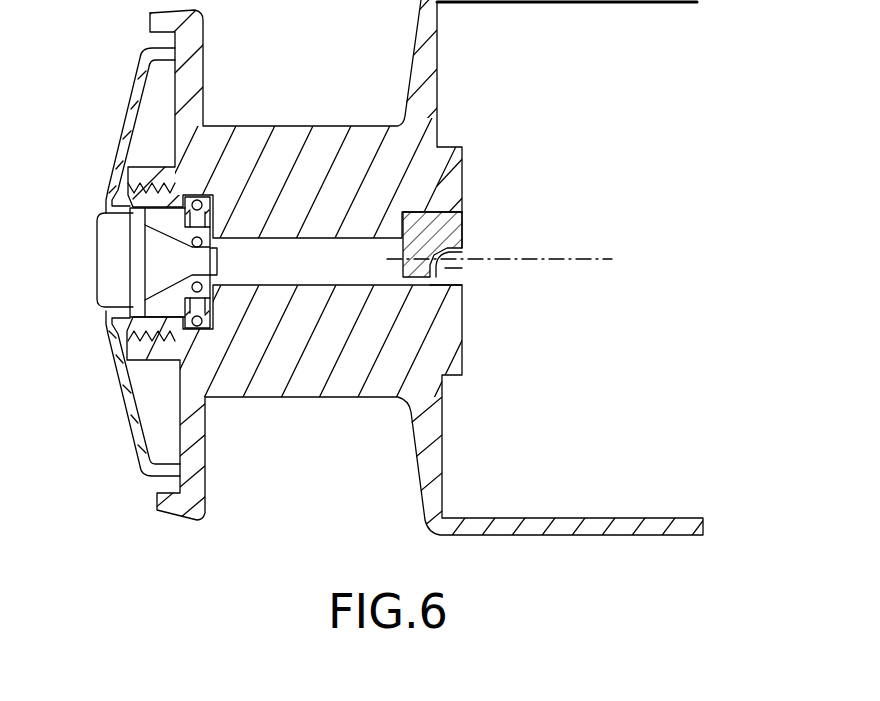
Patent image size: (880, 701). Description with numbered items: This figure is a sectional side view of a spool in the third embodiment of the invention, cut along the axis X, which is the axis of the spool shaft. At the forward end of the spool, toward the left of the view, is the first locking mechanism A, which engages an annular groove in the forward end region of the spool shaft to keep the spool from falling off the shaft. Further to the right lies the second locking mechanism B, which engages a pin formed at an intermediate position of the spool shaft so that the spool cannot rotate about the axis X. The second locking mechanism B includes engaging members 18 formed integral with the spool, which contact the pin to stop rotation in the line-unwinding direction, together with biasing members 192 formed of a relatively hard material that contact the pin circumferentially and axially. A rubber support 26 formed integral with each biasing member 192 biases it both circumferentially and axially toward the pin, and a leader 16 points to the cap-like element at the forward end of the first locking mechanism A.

The bolt / cap assembly 16 is at (110, 283).
The engaging members 18 is at (455, 279).
The biasing members 192 is at (452, 249).
The rubber support 26 is at (442, 225).
The first locking mechanism A is at (70, 163).
The second locking mechanism B is at (509, 140).
The axis X is at (512, 261).